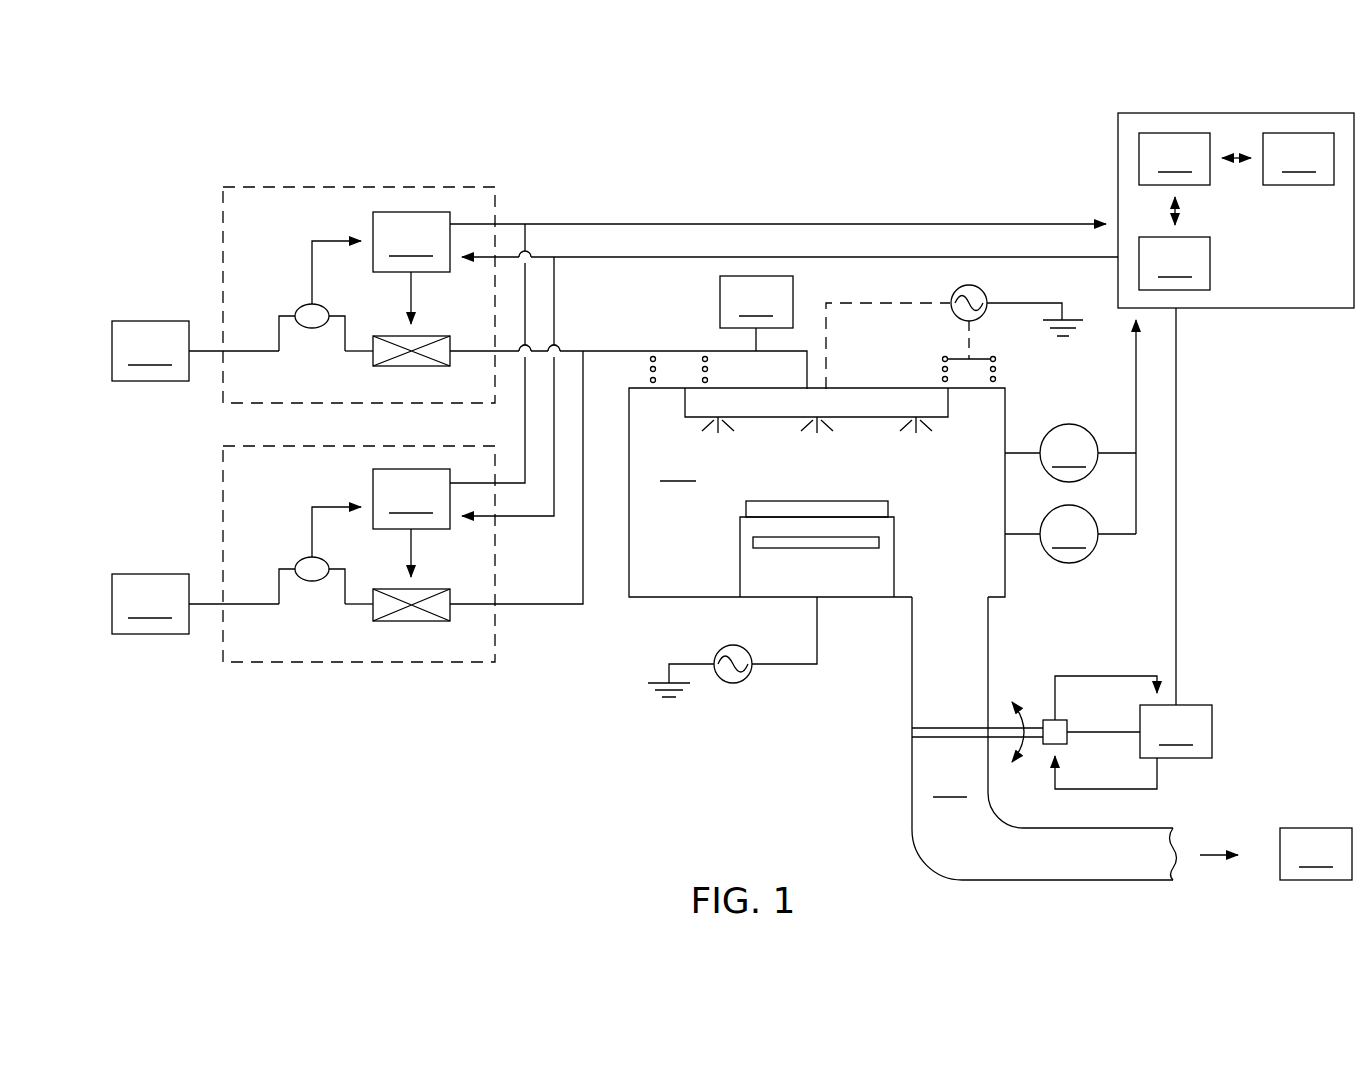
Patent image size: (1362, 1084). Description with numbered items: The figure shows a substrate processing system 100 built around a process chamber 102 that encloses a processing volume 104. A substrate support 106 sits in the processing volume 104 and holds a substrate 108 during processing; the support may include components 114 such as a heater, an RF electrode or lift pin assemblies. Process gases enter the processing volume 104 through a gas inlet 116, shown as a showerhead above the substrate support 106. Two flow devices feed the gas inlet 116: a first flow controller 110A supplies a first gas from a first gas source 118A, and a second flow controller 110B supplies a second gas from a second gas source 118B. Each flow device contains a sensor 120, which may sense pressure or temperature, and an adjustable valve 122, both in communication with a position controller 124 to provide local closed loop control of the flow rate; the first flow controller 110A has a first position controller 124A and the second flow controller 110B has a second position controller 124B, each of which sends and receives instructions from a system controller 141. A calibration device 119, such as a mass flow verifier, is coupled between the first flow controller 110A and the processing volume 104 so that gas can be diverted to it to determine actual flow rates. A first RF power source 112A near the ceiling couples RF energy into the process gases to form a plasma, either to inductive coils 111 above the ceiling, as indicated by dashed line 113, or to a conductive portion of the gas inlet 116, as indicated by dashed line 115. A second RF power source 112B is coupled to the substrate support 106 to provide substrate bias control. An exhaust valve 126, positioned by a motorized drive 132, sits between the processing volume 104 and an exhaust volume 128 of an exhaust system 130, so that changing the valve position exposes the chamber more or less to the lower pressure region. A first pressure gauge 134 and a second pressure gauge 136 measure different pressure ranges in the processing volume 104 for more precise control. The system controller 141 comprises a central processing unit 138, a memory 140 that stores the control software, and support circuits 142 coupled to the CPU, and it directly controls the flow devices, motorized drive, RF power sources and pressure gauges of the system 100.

The substrate processing system 100 is at (676, 135).
The process chamber 102 is at (1007, 587).
The processing volume 104 is at (678, 467).
The substrate support 106 is at (896, 552).
The substrate 108 is at (892, 508).
The first flow controller 110A is at (412, 187).
The second flow controller 110B is at (415, 662).
The inductive coils 111 is at (1000, 379).
The first RF power source 112A is at (988, 290).
The second RF power source 112B is at (735, 683).
The dashed line 113 is at (957, 359).
The components 114 is at (753, 541).
The dashed line 115 is at (918, 300).
The gas inlet 116 is at (948, 403).
The first gas source 118A is at (150, 351).
The second gas source 118B is at (150, 604).
The calibration device 119 is at (756, 313).
The sensor 120 is at (305, 306).
The adjustable valve 122 is at (393, 367).
The position controller 124 is at (358, 219).
The first position controller 124A is at (411, 242).
The second position controller 124B is at (411, 499).
The exhaust valve 126 is at (1045, 720).
The exhaust volume 128 is at (1044, 738).
The exhaust system 130 is at (1316, 854).
The motorized drive 132 is at (1133, 732).
The first pressure gauge 134 is at (1070, 453).
The second pressure gauge 136 is at (1070, 534).
The central processing unit 138 is at (1174, 159).
The memory 140 is at (1174, 263).
The system controller 141 is at (1118, 146).
The support circuits 142 is at (1298, 159).